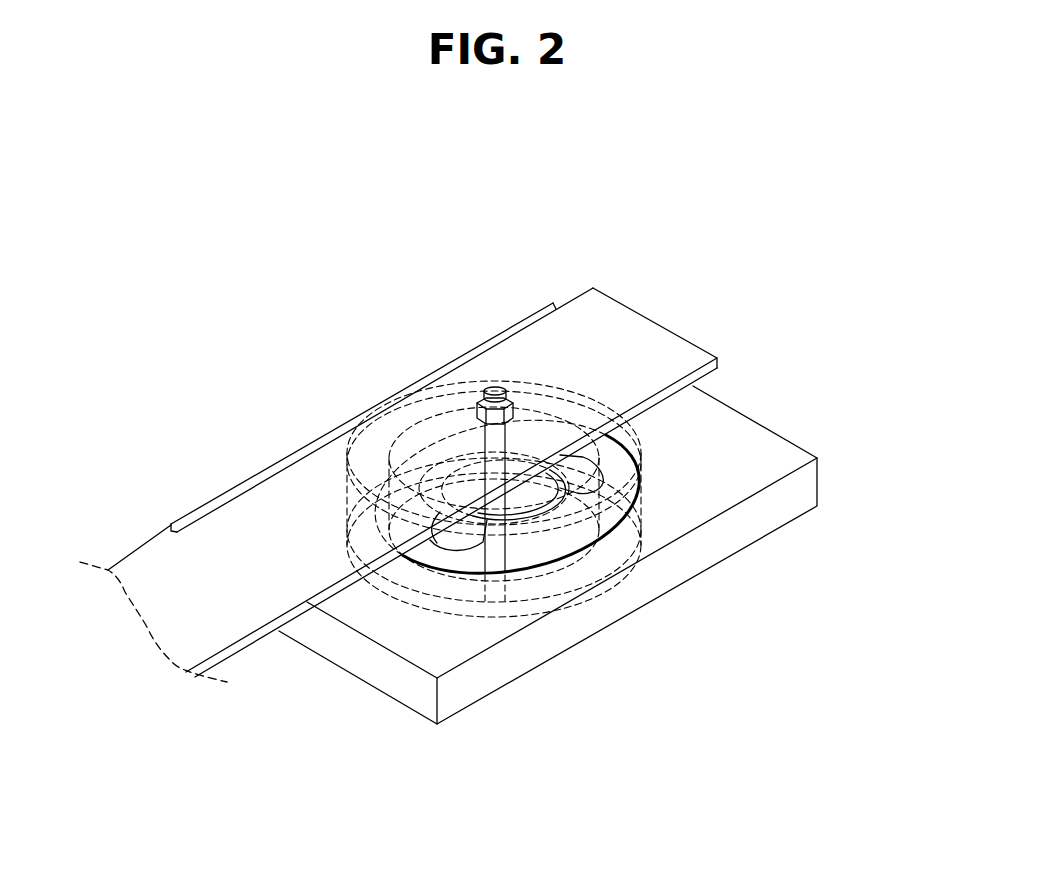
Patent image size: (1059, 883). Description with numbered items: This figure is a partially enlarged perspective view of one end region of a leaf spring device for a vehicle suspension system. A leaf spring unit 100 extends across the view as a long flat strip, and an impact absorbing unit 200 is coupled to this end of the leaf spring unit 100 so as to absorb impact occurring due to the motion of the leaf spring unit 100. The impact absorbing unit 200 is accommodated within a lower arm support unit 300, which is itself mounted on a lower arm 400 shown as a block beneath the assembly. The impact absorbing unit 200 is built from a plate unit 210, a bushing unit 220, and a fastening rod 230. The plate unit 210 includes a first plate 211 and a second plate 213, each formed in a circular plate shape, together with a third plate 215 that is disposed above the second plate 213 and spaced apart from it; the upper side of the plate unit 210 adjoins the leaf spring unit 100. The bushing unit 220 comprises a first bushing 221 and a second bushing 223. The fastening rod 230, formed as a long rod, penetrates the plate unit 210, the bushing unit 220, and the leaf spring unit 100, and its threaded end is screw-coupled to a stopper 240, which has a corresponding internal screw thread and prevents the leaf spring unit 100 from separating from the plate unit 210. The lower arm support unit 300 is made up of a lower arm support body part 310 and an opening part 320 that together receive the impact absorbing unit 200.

The leaf spring unit 100 is at (210, 545).
The impact absorbing unit 200 is at (565, 210).
The plate unit 210 is at (744, 289).
The first plate 211 is at (640, 495).
The second plate 213 is at (545, 468).
The third plate 215 is at (543, 402).
The bushing unit 220 is at (290, 333).
The first bushing 221 is at (437, 523).
The second bushing 223 is at (452, 485).
The fastening rod 230 is at (493, 389).
The stopper 240 is at (508, 382).
The lower arm support unit 300 is at (577, 787).
The lower arm support body part 310 is at (565, 587).
The opening part 320 is at (466, 543).
The lower arm 400 is at (725, 533).